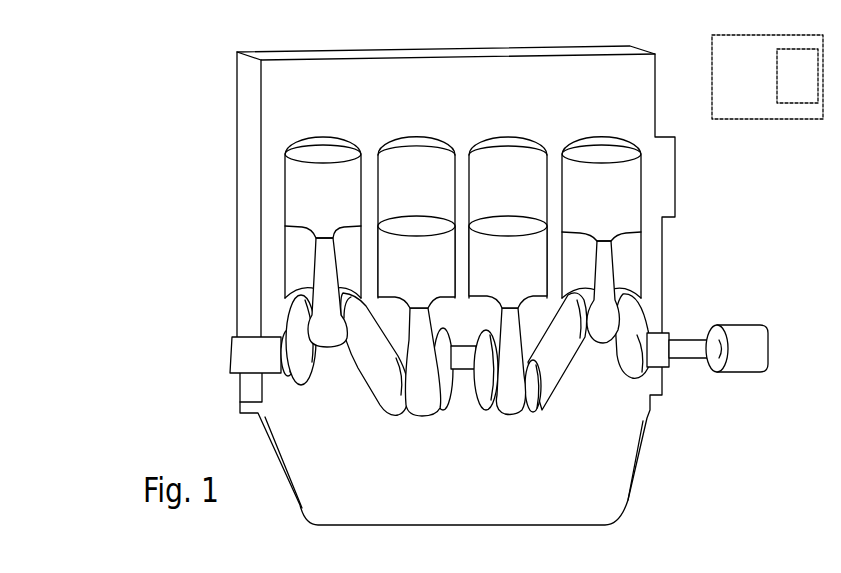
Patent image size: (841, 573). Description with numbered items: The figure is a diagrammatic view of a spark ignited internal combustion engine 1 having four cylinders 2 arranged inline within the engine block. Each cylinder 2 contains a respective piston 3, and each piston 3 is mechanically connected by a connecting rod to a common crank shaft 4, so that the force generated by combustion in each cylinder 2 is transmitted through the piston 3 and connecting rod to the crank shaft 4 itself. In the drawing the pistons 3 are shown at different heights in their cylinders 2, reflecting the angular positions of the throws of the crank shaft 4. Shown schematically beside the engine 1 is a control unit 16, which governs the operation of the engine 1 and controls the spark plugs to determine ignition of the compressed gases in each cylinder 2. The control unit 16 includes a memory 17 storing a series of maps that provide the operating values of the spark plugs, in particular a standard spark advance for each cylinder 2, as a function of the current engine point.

The internal combustion engine 1 is at (181, 93).
The cylinder 2 is at (413, 153).
The piston 3 is at (612, 198).
The crank shaft 4 is at (243, 345).
The control unit 16 is at (767, 77).
The memory 17 is at (797, 76).